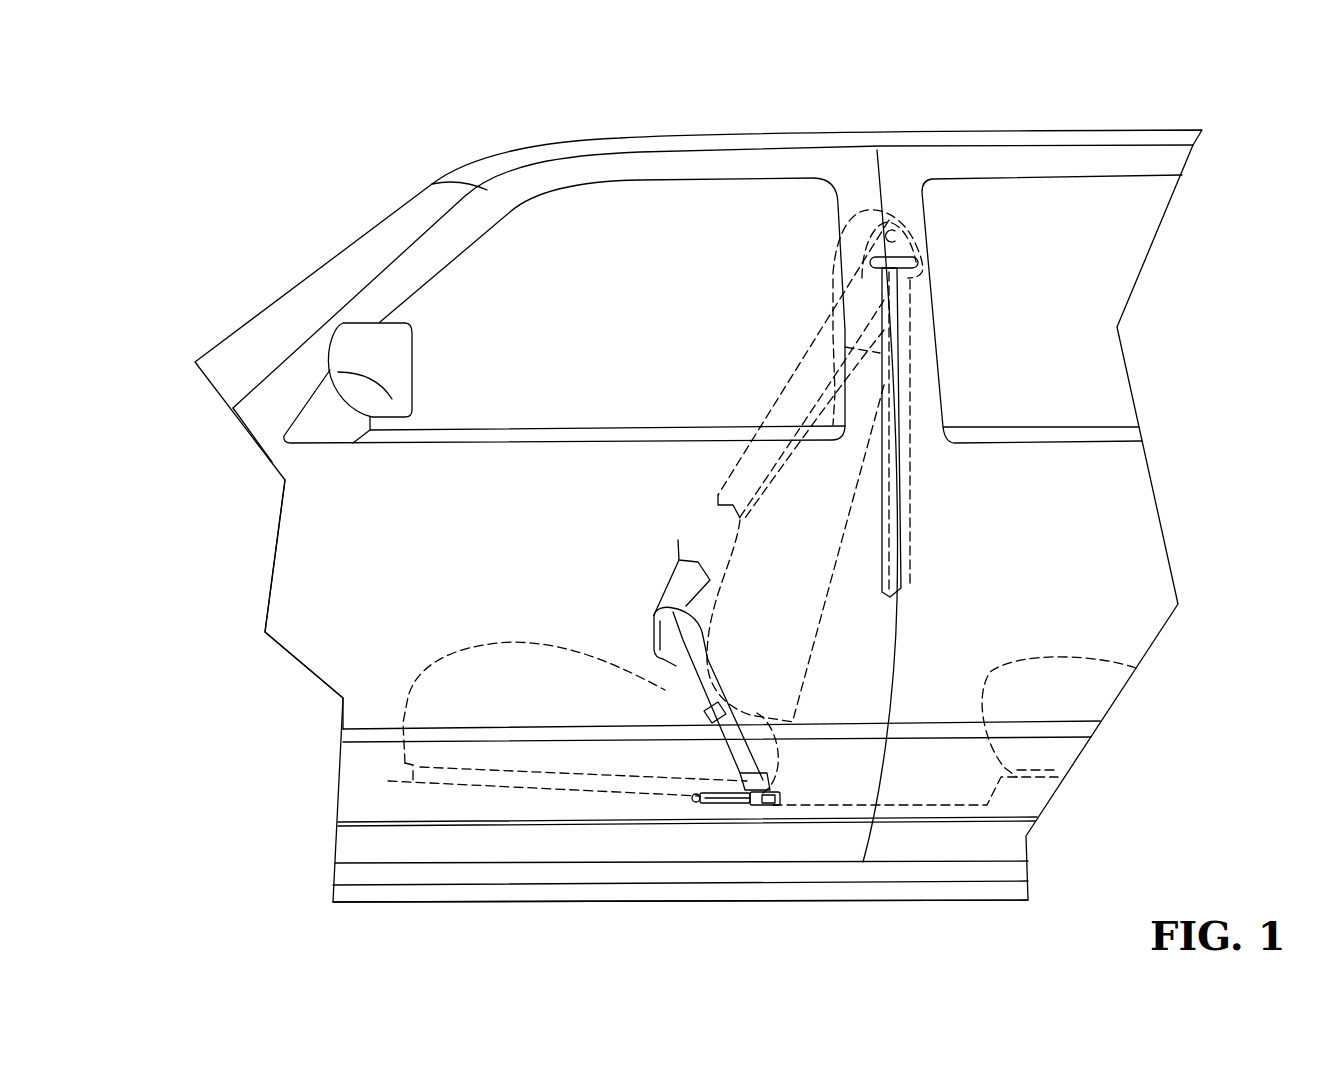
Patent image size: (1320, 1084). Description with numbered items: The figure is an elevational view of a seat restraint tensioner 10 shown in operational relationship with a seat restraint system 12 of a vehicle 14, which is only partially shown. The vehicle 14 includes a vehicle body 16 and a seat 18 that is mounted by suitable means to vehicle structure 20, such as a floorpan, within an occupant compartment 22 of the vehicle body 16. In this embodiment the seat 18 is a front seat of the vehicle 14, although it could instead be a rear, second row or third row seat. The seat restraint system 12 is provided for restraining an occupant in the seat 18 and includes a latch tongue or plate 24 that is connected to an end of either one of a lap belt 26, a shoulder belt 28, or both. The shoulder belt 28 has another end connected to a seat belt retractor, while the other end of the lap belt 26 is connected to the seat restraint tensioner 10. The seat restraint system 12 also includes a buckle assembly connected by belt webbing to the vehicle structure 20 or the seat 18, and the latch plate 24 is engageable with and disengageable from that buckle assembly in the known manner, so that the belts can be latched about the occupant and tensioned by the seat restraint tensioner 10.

The seat restraint tensioner 10 is at (710, 750).
The seat restraint system 12 is at (910, 312).
The vehicle 14 is at (502, 156).
The vehicle body 16 is at (343, 517).
The seat 18 is at (807, 677).
The vehicle structure 20 is at (446, 822).
The occupant compartment 22 is at (663, 240).
The latch tongue or plate 24 is at (655, 658).
The lap belt 26 is at (690, 662).
The shoulder belt 28 is at (865, 310).